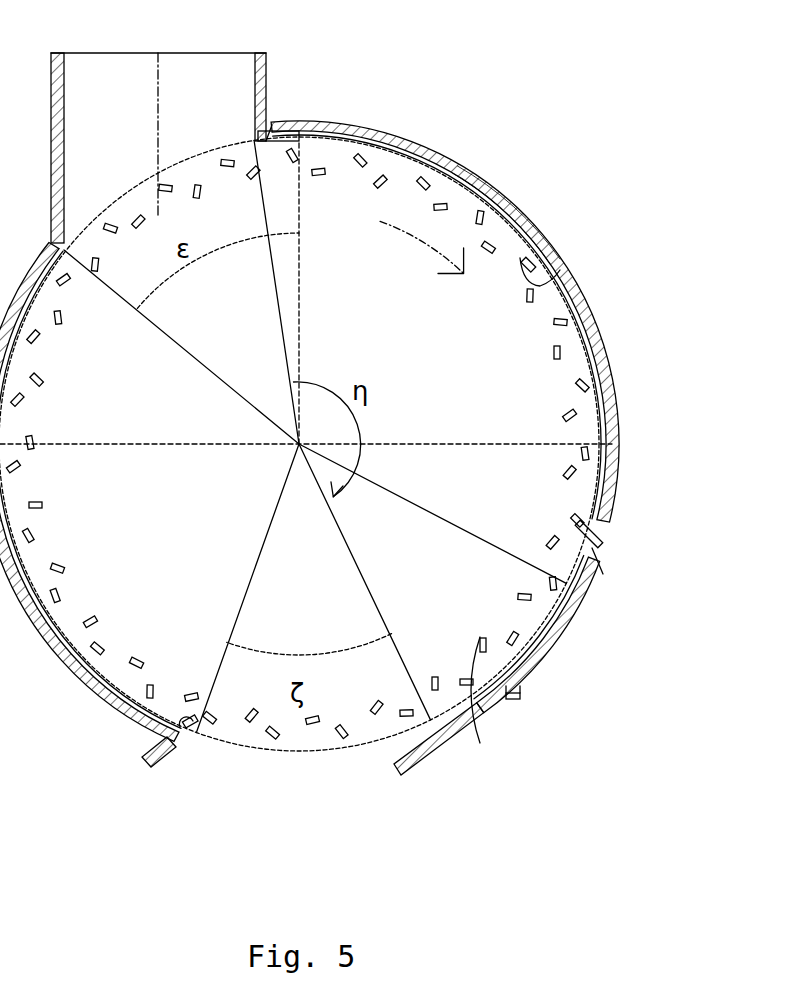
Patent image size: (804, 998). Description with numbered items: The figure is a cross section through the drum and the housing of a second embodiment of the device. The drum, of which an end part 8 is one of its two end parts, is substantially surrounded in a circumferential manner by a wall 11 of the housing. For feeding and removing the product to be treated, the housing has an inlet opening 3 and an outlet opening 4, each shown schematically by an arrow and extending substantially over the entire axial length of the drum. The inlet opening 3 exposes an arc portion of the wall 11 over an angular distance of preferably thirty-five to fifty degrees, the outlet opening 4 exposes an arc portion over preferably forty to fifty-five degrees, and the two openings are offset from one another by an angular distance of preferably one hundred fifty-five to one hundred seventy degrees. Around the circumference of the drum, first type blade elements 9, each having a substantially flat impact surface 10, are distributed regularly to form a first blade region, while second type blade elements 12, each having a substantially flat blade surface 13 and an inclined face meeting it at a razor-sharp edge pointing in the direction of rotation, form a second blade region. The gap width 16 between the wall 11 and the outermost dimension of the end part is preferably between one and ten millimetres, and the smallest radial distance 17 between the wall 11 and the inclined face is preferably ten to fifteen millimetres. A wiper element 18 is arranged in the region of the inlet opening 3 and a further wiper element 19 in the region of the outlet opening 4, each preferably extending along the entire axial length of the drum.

The inlet opening 3 is at (107, 170).
The outlet opening 4 is at (257, 860).
The end part 8 is at (383, 165).
The first type blade element 9 is at (520, 697).
The impact surface 10 is at (480, 743).
The wall 11 is at (543, 650).
The second type blade element 12 is at (521, 240).
The blade surface 13 is at (560, 270).
The gap width 16 is at (506, 196).
The smallest radial distance 17 is at (592, 556).
The wiper element 18 is at (259, 142).
The wiper element 19 is at (185, 735).